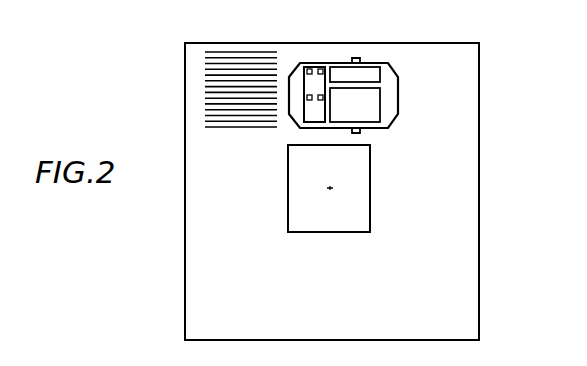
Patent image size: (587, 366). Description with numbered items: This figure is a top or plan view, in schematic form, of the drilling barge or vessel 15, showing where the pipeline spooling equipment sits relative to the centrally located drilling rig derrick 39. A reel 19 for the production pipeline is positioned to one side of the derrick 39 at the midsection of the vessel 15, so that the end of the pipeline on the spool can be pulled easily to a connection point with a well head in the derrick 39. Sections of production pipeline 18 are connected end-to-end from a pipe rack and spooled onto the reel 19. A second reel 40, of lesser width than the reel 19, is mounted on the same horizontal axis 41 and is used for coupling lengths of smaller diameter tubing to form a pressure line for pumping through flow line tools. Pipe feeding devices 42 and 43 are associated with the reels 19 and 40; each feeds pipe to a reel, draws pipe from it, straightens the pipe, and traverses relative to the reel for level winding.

The drilling barge or vessel 15 is at (483, 172).
The production pipeline 18 is at (238, 58).
The reel 19 is at (373, 103).
The drilling rig derrick 39 is at (335, 228).
The second reel 40 is at (372, 72).
The horizontal axis 41 is at (354, 61).
The pipe feeding device 42 is at (310, 100).
The pipe feeding device 43 is at (316, 63).